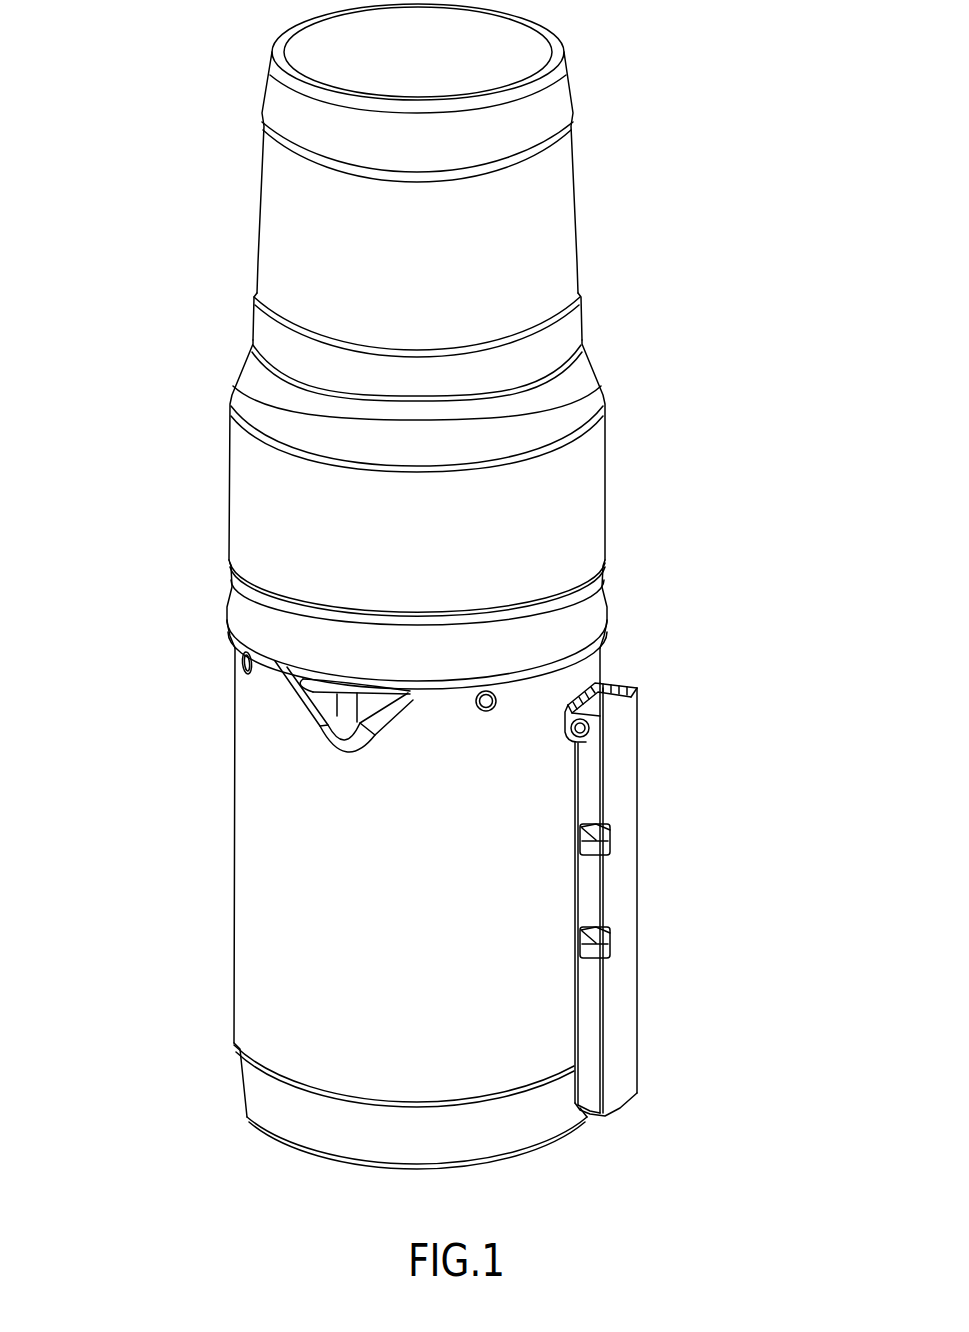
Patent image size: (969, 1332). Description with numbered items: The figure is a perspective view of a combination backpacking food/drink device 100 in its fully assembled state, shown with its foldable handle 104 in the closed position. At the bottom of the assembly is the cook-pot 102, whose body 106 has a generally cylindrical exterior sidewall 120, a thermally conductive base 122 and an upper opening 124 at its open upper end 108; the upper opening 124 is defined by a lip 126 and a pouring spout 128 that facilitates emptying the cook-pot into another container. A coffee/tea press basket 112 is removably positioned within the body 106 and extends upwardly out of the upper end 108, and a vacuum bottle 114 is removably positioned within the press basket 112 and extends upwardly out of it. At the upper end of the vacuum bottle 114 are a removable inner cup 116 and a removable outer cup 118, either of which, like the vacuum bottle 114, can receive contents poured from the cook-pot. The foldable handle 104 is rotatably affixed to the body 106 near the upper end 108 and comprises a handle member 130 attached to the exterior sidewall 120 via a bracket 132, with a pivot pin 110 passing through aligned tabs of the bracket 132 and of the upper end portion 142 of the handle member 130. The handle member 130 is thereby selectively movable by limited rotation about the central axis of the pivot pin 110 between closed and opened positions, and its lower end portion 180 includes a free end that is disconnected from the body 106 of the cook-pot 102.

The combination backpacking food/drink device 100 is at (782, 130).
The cook-pot 102 is at (233, 942).
The foldable handle 104 is at (640, 987).
The body 106 is at (440, 893).
The open upper end 108 is at (587, 665).
The pivot pin 110 is at (585, 740).
The coffee/tea press basket 112 is at (240, 603).
The vacuum bottle 114 is at (591, 487).
The removable inner cup 116 is at (568, 326).
The removable outer cup 118 is at (272, 210).
The exterior sidewall 120 is at (252, 1015).
The thermally conductive base 122 is at (305, 1130).
The upper opening 124 is at (303, 681).
The lip 126 is at (233, 633).
The pouring spout 128 is at (337, 715).
The handle member 130 is at (625, 848).
The bracket 132 is at (606, 692).
The upper end portion 142 is at (627, 720).
The lower end portion 180 is at (623, 1065).